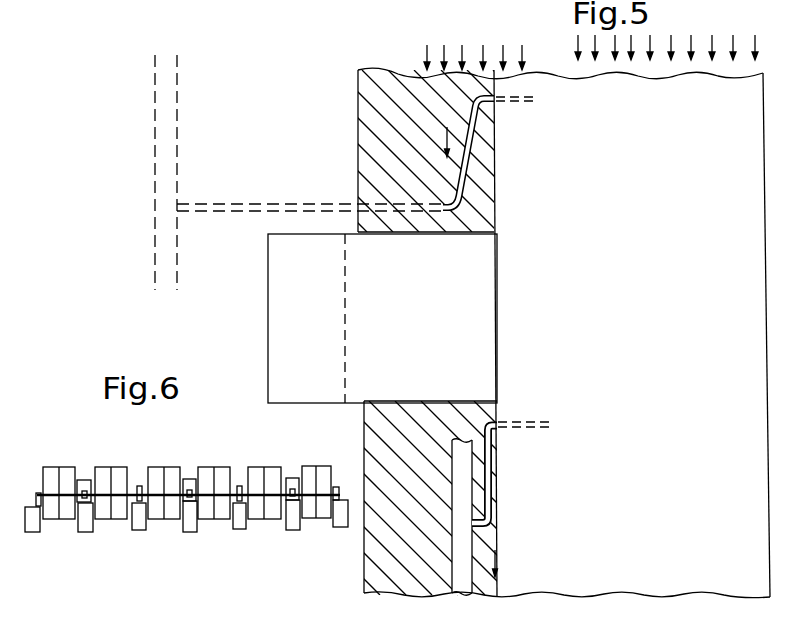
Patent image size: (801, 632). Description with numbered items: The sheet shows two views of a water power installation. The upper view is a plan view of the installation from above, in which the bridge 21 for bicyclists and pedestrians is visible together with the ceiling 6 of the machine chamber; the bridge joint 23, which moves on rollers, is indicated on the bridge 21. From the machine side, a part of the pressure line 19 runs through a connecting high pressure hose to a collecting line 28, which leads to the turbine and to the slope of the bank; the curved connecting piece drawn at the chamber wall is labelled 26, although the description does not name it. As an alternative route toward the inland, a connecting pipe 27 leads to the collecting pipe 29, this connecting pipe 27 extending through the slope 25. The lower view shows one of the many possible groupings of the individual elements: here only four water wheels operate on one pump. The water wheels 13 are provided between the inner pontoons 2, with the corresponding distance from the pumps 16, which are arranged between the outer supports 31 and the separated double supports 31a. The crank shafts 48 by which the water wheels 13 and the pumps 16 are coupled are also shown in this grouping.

In FIG. 6, the inner pontoons 2 is at (188, 538).
In FIG. 5, the ceiling of the machine chamber 6 is at (630, 297).
In FIG. 6, the water wheels 13 is at (58, 467).
In FIG. 6, the pumps 16 is at (84, 480).
In FIG. 5, the pressure line 19 is at (518, 103).
In FIG. 5, the bridge 21 is at (426, 325).
In FIG. 5, the bridge joint 23 is at (345, 316).
In FIG. 5, the slope 25 is at (361, 123).
In FIG. 5, the conductor wire 26 is at (463, 160).
In FIG. 5, the connecting pipe 27 is at (249, 211).
In FIG. 5, the collecting line 28 is at (467, 557).
In FIG. 5, the collecting pipe 29 is at (161, 123).
In FIG. 6, the outer supports 31 is at (38, 510).
In FIG. 6, the separated double supports 31a is at (139, 486).
In FIG. 6, the crank shafts 48 is at (84, 533).